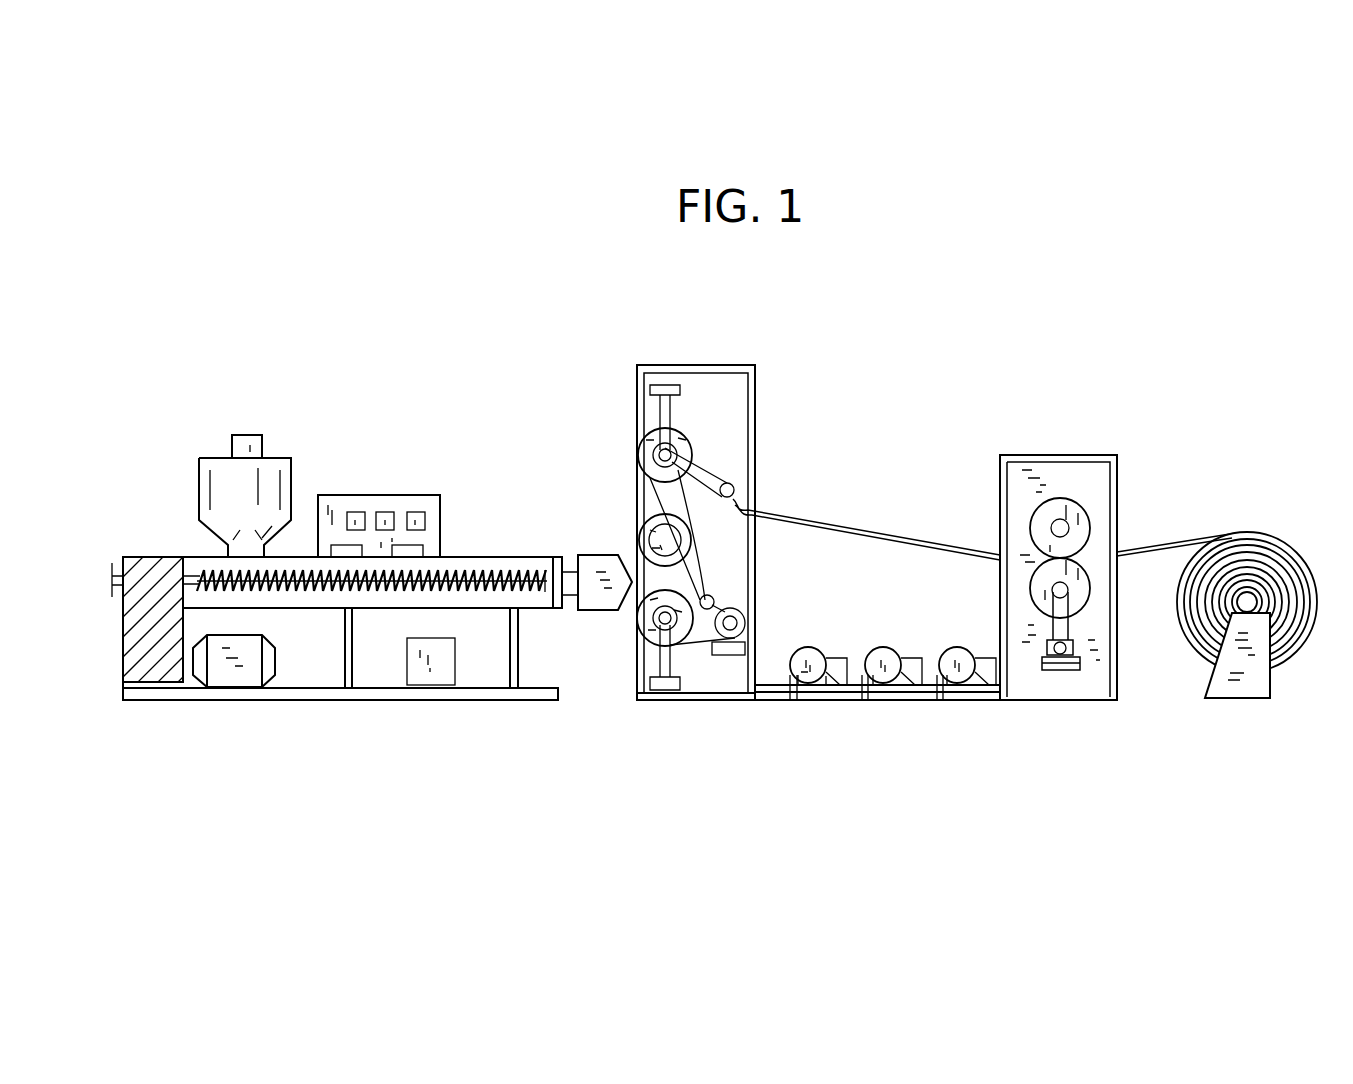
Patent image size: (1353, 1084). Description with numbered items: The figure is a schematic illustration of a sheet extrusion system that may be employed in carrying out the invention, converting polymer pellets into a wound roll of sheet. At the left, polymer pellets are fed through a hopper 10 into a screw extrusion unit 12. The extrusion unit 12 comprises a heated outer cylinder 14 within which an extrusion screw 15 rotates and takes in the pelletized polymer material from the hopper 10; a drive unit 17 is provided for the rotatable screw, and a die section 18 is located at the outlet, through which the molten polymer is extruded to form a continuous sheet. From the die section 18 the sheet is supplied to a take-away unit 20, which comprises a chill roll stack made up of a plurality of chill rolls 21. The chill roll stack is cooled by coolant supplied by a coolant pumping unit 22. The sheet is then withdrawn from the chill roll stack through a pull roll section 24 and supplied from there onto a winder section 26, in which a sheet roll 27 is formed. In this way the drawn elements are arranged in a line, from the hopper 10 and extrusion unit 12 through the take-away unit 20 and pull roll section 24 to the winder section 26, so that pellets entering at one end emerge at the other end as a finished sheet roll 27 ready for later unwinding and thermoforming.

The hopper 10 is at (225, 441).
The screw extrusion unit 12 is at (377, 493).
The heated outer cylinder 14 is at (544, 557).
The extrusion screw 15 is at (522, 575).
The drive unit 17 is at (231, 673).
The die section 18 is at (596, 612).
The take-away unit 20 is at (731, 708).
The chill rolls 21 is at (722, 438).
The coolant pumping unit 22 is at (883, 710).
The pull roll section 24 is at (1040, 455).
The winder section 26 is at (1237, 700).
The sheet roll 27 is at (1247, 534).